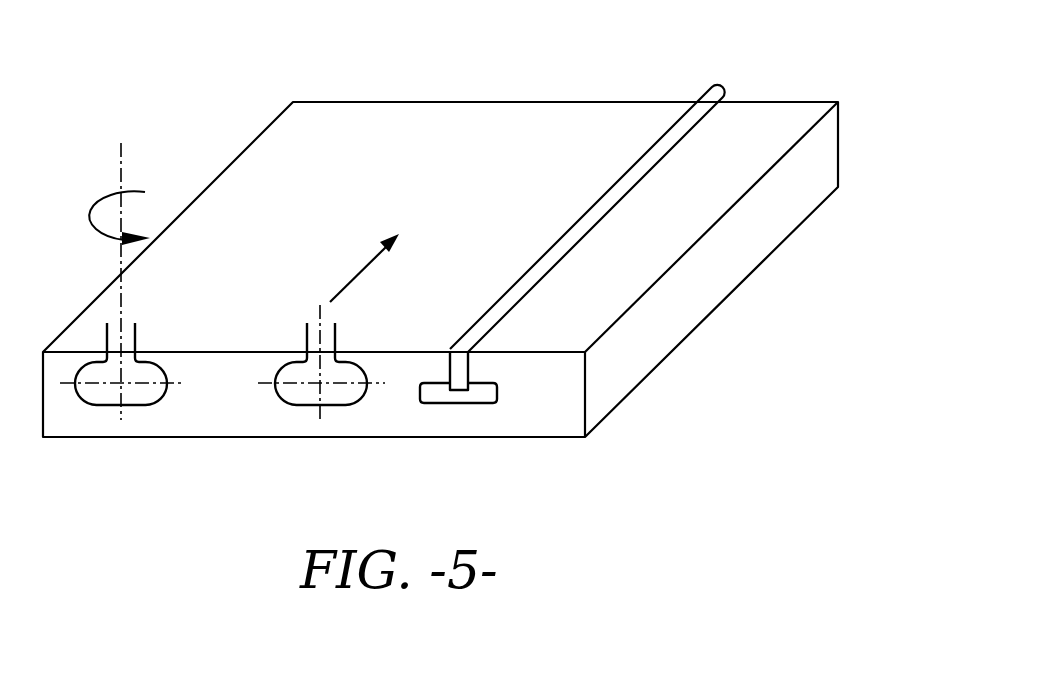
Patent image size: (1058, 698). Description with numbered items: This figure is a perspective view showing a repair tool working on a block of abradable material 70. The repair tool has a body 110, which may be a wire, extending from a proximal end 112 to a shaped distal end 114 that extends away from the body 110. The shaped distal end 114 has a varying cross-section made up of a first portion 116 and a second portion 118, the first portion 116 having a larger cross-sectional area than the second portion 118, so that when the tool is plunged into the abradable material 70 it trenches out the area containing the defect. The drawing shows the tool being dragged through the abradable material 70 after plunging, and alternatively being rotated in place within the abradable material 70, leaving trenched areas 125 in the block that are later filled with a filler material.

The abradable material 70 is at (680, 312).
The body 110 is at (593, 185).
The proximal end 112 is at (725, 86).
The shaped distal end 114 is at (490, 428).
The first portion 116 is at (438, 405).
The second portion 118 is at (470, 362).
The trenched area 125 is at (102, 385).